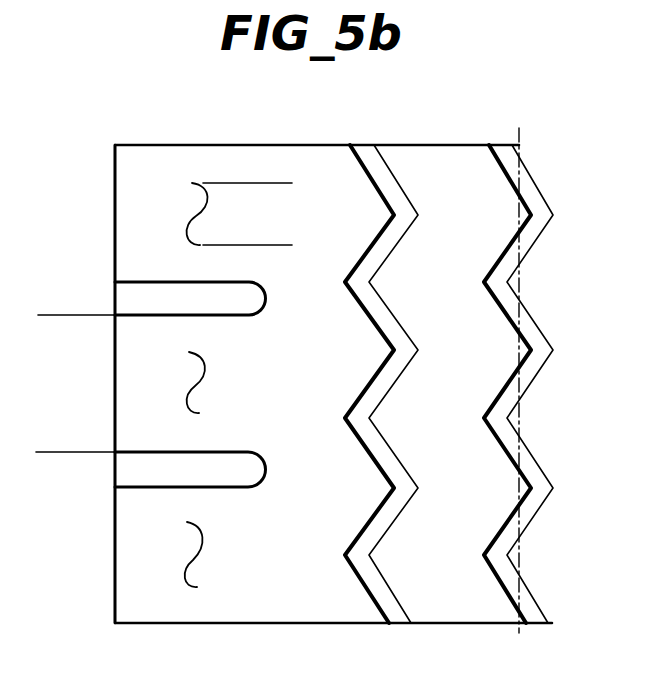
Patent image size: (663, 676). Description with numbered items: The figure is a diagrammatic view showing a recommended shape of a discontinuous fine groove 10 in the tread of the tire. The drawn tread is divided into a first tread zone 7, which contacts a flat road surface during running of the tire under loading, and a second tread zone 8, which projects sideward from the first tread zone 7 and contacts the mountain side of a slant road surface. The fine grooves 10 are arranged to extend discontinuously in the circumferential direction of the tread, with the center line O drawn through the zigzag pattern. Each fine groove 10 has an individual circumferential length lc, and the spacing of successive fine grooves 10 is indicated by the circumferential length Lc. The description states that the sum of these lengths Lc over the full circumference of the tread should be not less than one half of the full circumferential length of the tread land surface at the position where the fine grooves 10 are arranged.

The first tread zone 7 is at (178, 128).
The second tread zone 8 is at (113, 128).
The fine groove 10 is at (190, 216).
The center line O is at (518, 282).
The total circumferential length Lc is at (45, 315).
The circumferential length of fine groove lc is at (284, 183).